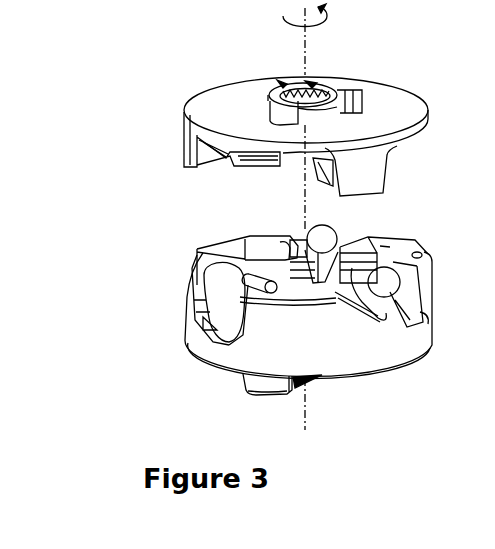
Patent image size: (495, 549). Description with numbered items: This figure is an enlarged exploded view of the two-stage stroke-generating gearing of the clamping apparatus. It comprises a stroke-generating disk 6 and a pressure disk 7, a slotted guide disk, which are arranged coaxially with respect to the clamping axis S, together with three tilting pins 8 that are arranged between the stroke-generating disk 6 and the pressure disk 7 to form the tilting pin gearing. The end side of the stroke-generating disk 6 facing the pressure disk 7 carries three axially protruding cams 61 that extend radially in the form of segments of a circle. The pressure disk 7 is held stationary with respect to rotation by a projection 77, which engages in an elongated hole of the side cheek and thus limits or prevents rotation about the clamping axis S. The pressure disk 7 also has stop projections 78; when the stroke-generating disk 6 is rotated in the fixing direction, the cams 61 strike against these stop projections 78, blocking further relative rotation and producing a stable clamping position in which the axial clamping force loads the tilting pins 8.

The stroke-generating disk 6 is at (398, 110).
The cams 61 is at (355, 172).
The pressure disk 7 is at (365, 355).
The projection 77 is at (268, 382).
The stop projections 78 is at (296, 259).
The tilting pins 8 is at (222, 300).
The clamping axis S is at (305, 41).